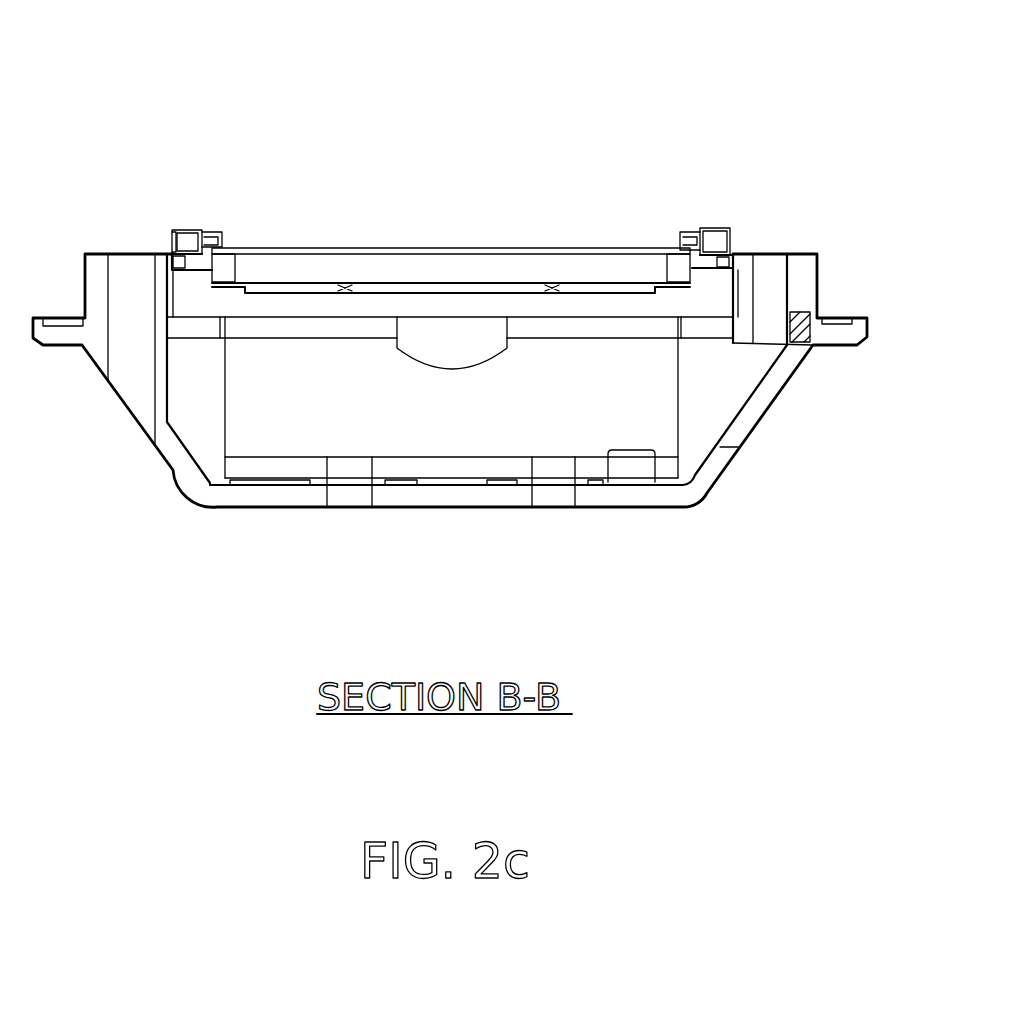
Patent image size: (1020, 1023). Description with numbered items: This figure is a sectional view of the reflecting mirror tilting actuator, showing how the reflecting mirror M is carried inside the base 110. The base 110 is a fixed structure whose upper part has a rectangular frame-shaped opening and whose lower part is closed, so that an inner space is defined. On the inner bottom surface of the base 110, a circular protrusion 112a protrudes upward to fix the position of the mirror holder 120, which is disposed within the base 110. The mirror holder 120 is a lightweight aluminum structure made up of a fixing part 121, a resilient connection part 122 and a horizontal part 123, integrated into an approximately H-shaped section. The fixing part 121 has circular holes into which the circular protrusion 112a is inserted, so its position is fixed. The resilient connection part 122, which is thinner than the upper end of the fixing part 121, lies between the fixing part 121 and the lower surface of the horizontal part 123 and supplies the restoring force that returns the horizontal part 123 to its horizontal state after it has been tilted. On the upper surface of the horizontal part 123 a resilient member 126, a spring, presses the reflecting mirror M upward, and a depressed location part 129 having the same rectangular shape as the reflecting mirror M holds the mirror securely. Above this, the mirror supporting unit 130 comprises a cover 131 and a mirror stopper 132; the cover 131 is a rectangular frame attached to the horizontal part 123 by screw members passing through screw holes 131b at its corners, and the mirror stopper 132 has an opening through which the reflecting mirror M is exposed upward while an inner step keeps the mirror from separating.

The base 110 is at (183, 468).
The circular protrusion 112a is at (657, 463).
The mirror holder 120 is at (537, 474).
The fixing part 121 is at (663, 387).
The resilient connection part 122 is at (668, 327).
The horizontal part 123 is at (718, 285).
The resilient member 126 is at (345, 285).
The location part 129 is at (615, 290).
The reflecting mirror M is at (488, 265).
The mirror supporting unit 130 is at (472, 148).
The cover 131 is at (215, 230).
The screw hole 131b is at (187, 230).
The mirror stopper 132 is at (237, 240).